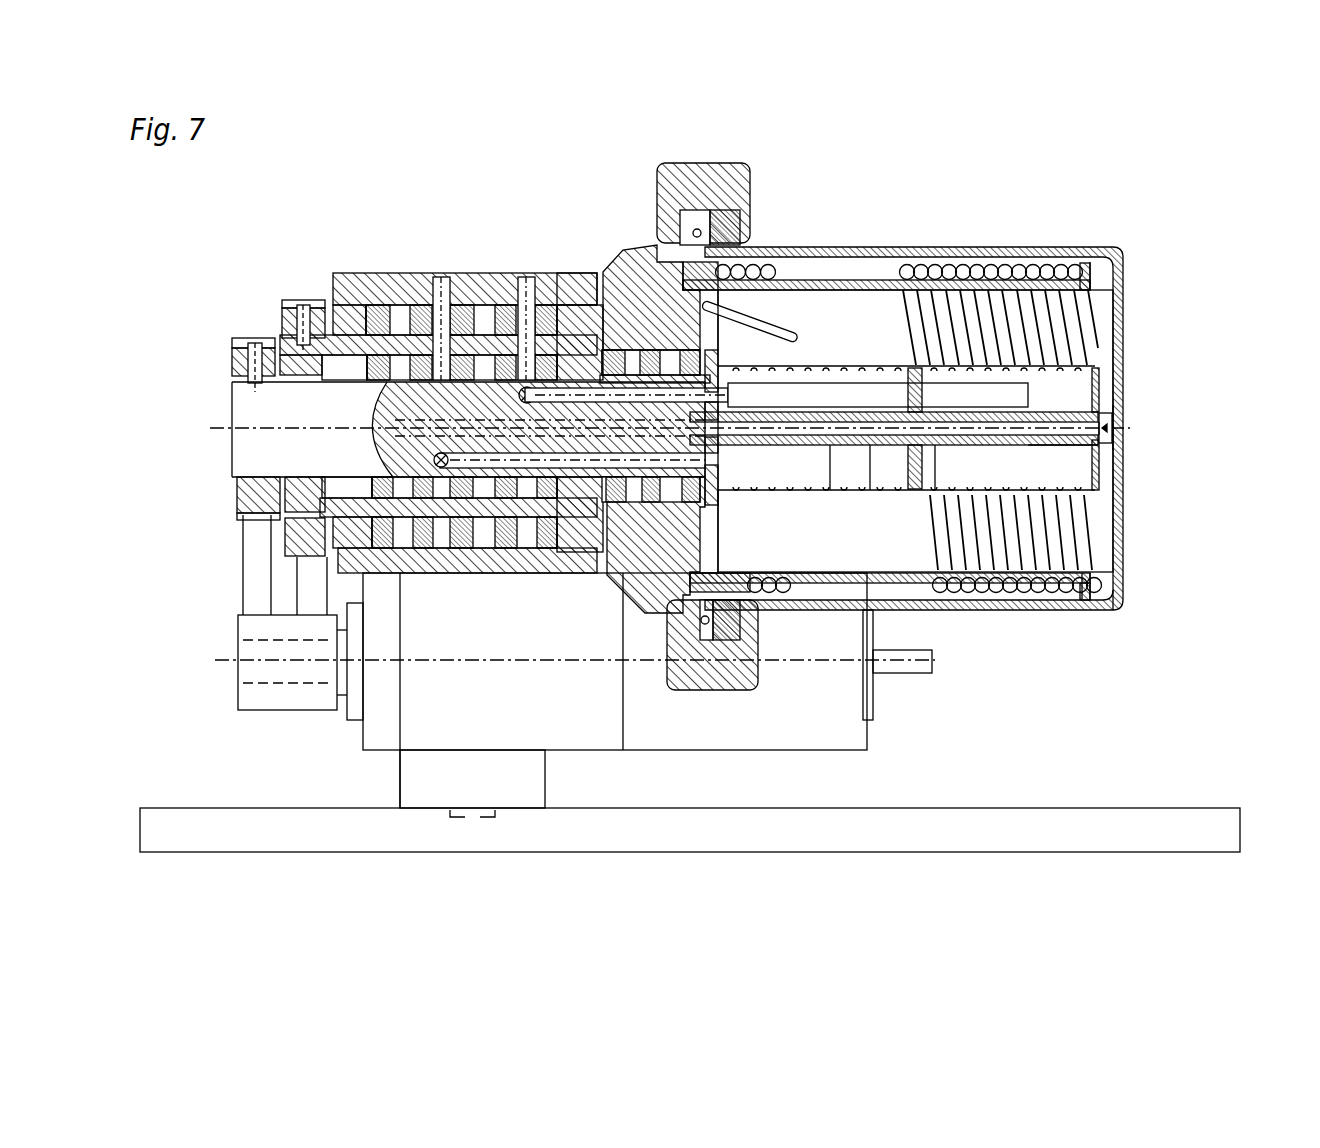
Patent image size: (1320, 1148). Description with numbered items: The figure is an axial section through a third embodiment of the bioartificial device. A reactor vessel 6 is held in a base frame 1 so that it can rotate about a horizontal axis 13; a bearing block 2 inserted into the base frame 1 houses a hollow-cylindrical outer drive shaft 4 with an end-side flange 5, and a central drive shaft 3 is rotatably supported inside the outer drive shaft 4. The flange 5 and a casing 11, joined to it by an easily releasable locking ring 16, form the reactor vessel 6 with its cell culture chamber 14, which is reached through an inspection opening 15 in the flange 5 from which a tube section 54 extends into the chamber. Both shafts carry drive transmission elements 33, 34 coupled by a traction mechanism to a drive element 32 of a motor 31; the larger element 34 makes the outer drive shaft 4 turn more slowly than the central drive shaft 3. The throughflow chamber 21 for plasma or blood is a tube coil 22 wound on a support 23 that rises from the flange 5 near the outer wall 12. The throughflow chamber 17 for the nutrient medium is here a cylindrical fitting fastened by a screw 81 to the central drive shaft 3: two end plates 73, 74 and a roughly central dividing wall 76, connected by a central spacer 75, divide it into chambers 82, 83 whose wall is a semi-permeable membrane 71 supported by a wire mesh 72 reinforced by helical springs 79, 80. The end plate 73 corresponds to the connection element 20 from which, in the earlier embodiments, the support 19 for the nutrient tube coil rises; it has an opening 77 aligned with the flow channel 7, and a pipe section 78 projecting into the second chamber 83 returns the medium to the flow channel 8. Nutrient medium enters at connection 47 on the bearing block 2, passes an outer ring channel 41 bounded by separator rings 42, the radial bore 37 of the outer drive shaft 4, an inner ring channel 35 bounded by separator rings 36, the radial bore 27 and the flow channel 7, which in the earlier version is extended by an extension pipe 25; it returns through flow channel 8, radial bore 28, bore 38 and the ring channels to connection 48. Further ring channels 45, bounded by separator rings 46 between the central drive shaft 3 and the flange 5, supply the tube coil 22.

The base frame 1 is at (430, 793).
The bearing block 2 is at (345, 290).
The central drive shaft 3 is at (262, 437).
The outer drive shaft 4 is at (300, 512).
The flange 5 is at (618, 300).
The reactor vessel 6 is at (943, 225).
The flow channel 7 is at (540, 573).
The flow channel 8 is at (582, 320).
The casing 11 is at (1127, 584).
The outer wall 12 is at (960, 600).
The horizontal axis 13 is at (1120, 427).
The cell culture chamber 14 is at (1100, 310).
The inspection opening 15 is at (632, 262).
The locking ring 16 is at (732, 190).
The throughflow chamber 17 is at (880, 466).
The support 19 is at (1100, 367).
The connection element 20 is at (730, 365).
The throughflow chamber 21 is at (1000, 267).
The tube coil 22 is at (1047, 597).
The support 23 is at (1093, 278).
The extension pipe 25 is at (1120, 445).
The radial bore 27 is at (338, 545).
The radial bore 28 is at (532, 385).
The motor 31 is at (378, 732).
The drive element 32 is at (302, 700).
The drive transmission element 33 is at (258, 340).
The drive transmission element 34 is at (300, 305).
The inner ring channels 35 is at (493, 573).
The separator rings 36 is at (520, 573).
The radial bore 37 is at (420, 313).
The radial bore 38 is at (497, 320).
The outer ring channels 41 is at (447, 573).
The separator rings 42 is at (398, 555).
The ring channels 45 is at (694, 520).
The separator rings 46 is at (660, 545).
The connection 47 is at (436, 295).
The connection 48 is at (525, 300).
The tube section 54 is at (757, 295).
The semi-permeable membrane 71 is at (870, 470).
The wire mesh 72 is at (845, 470).
The end plate 73 is at (722, 487).
The end plate 74 is at (1043, 460).
The central spacer 75 is at (1128, 597).
The dividing wall 76 is at (1068, 595).
The opening 77 is at (757, 482).
The pipe section 78 is at (828, 395).
The helical spring 79 is at (862, 365).
The helical spring 80 is at (1095, 493).
The screw 81 is at (1113, 410).
The first chamber 82 is at (935, 470).
The second chamber 83 is at (1100, 462).